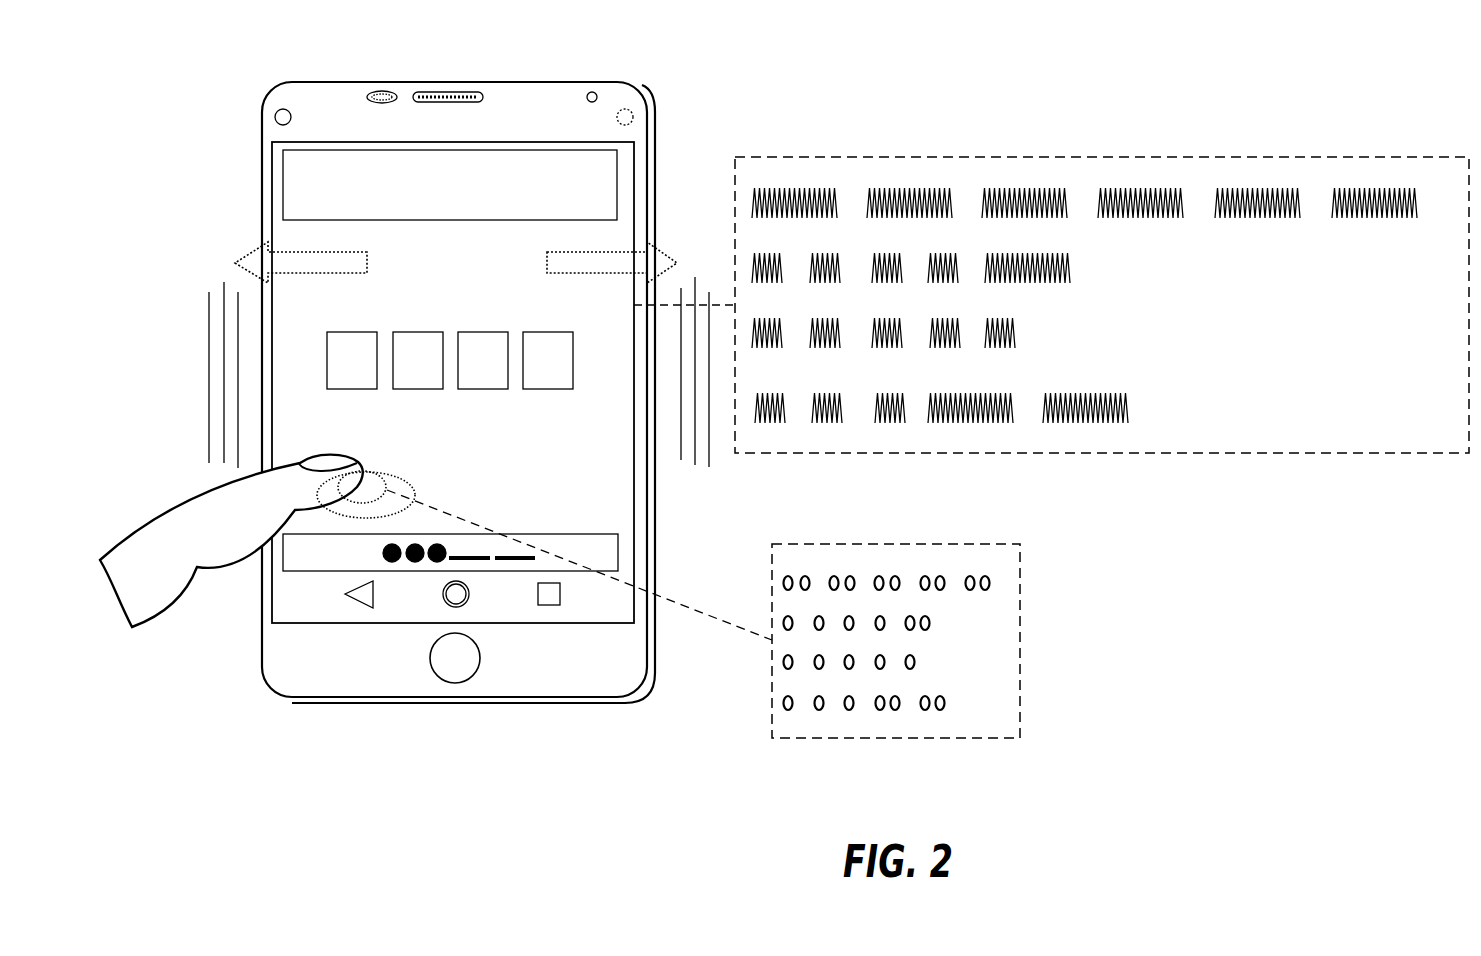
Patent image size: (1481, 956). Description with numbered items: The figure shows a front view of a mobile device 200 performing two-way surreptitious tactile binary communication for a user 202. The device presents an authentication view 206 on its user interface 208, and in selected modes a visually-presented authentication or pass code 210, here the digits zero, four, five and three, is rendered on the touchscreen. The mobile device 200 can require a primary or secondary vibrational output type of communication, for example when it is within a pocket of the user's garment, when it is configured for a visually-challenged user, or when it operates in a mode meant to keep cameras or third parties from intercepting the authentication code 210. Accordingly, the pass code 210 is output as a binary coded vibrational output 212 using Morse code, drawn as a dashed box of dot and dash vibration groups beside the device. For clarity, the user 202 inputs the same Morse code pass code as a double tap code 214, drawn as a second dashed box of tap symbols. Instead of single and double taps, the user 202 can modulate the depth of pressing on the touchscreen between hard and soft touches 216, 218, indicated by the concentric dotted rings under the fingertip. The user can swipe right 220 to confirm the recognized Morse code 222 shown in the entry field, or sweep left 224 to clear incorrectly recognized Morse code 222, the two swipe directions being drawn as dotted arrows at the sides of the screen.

The mobile device 200 is at (256, 118).
The user 202 is at (536, 138).
The authentication view 206 is at (433, 211).
The user interface 208 is at (306, 303).
The pass code 210 is at (580, 394).
The binary coded vibrational output 212 is at (1175, 157).
The double tap code 214 is at (1020, 638).
The hard touch 216 is at (408, 486).
The soft touch 218 is at (383, 478).
The swipe right 220 is at (652, 250).
The recognized Morse code 222 is at (617, 556).
The sweep left 224 is at (268, 250).